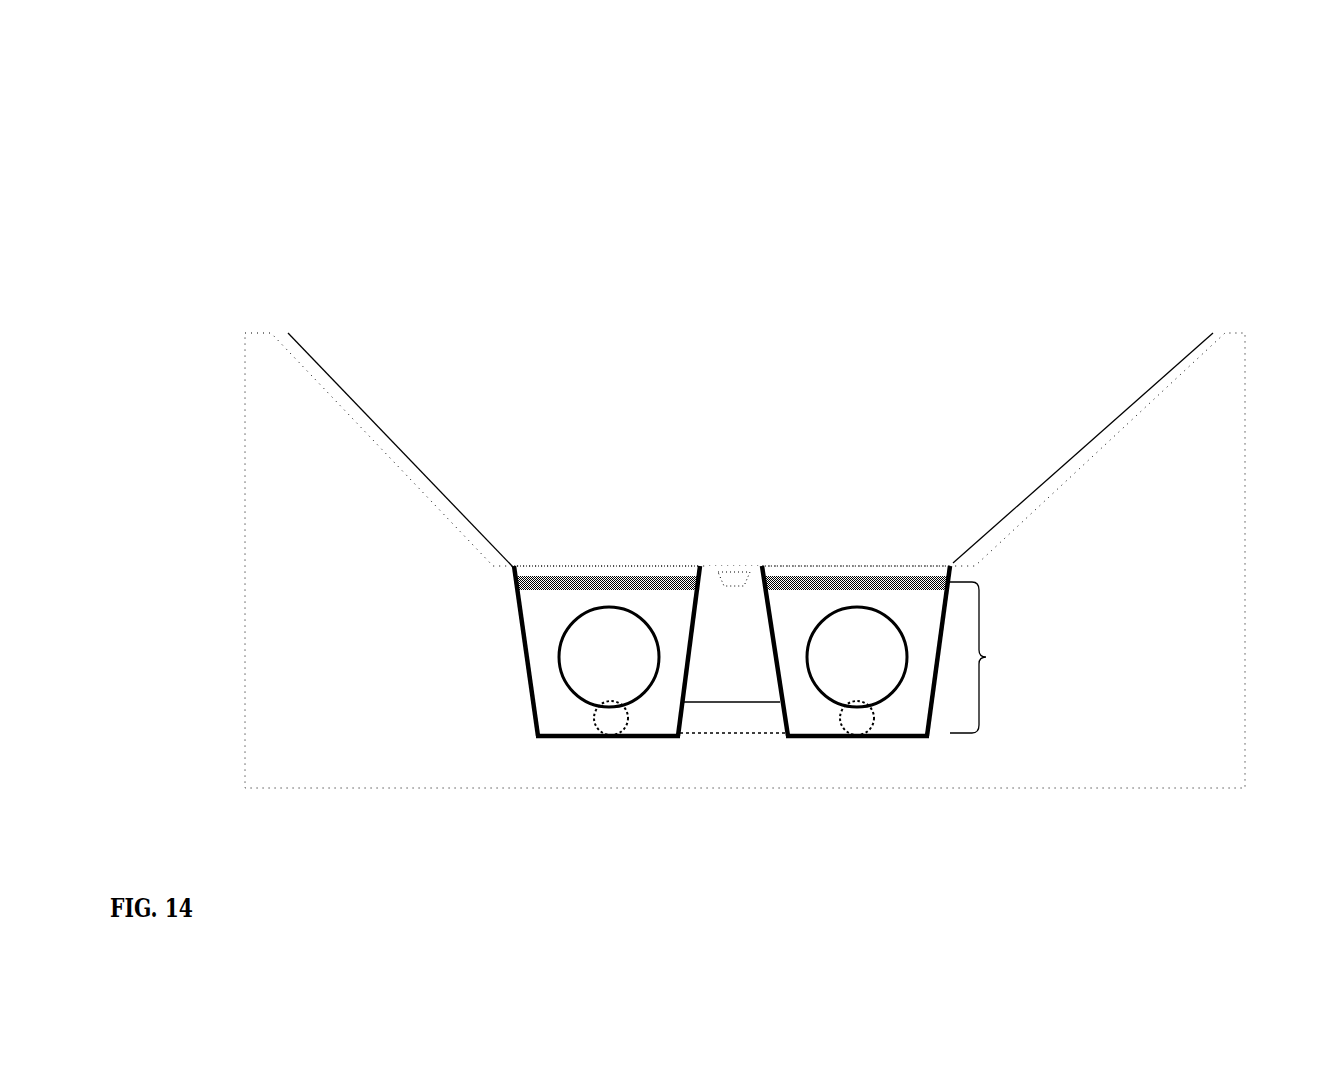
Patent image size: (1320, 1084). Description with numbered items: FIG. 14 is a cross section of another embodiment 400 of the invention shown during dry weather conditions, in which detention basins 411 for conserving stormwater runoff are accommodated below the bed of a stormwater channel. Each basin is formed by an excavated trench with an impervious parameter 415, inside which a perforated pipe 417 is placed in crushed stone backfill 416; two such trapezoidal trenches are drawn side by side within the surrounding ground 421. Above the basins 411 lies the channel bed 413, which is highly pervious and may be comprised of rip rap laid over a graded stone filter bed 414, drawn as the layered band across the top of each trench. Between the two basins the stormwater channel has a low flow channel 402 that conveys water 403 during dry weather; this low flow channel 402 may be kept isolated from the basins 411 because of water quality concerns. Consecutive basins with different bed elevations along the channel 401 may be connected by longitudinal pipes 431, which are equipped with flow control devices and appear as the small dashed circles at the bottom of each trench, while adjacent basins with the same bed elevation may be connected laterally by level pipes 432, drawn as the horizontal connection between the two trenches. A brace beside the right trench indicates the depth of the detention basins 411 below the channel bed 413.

The embodiment 400 is at (230, 158).
The channel 401 is at (357, 412).
The low flow channel 402 is at (765, 565).
The water 403 is at (737, 565).
The detention basin 411 is at (986, 657).
The channel bed 413 is at (597, 565).
The graded stone filter bed 414 is at (600, 584).
The impervious parameter 415 is at (538, 738).
The crushed stone backfill 416 is at (548, 633).
The perforated pipe 417 is at (567, 678).
The substrate body 421 is at (307, 612).
The longitudinal pipe 431 is at (597, 737).
The level pipe 432 is at (731, 735).